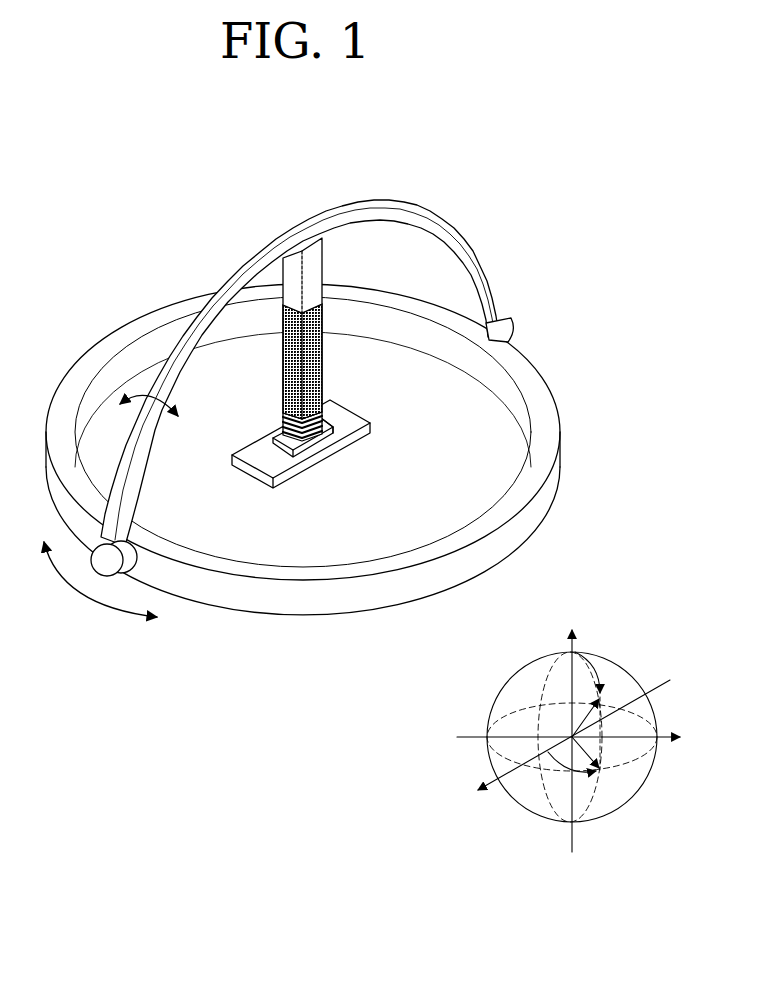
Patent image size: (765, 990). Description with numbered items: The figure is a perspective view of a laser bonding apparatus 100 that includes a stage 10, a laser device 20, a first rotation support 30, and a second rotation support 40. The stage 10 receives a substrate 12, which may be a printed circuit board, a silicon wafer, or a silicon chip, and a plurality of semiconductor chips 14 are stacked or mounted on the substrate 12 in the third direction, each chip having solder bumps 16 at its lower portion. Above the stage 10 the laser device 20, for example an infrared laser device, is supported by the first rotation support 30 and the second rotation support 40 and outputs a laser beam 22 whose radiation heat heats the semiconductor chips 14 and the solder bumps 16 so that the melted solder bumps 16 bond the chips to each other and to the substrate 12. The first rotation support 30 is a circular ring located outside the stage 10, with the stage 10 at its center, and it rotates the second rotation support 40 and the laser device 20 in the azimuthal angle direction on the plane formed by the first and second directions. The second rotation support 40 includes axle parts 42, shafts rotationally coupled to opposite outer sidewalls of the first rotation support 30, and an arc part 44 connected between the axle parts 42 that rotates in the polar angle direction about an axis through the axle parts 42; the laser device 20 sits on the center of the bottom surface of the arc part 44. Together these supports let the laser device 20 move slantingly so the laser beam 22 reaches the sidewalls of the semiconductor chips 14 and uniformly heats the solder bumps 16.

The laser bonding apparatus 100 is at (523, 172).
The stage 10 is at (363, 430).
The substrate 12 is at (297, 452).
The semiconductor chips 14 is at (310, 405).
The solder bumps 16 is at (327, 435).
The laser device 20 is at (313, 263).
The laser beam 22 is at (308, 357).
The first rotation support 30 is at (545, 496).
The second rotation support 40 is at (361, 388).
The axle parts 42 is at (500, 322).
The arc part 44 is at (483, 277).